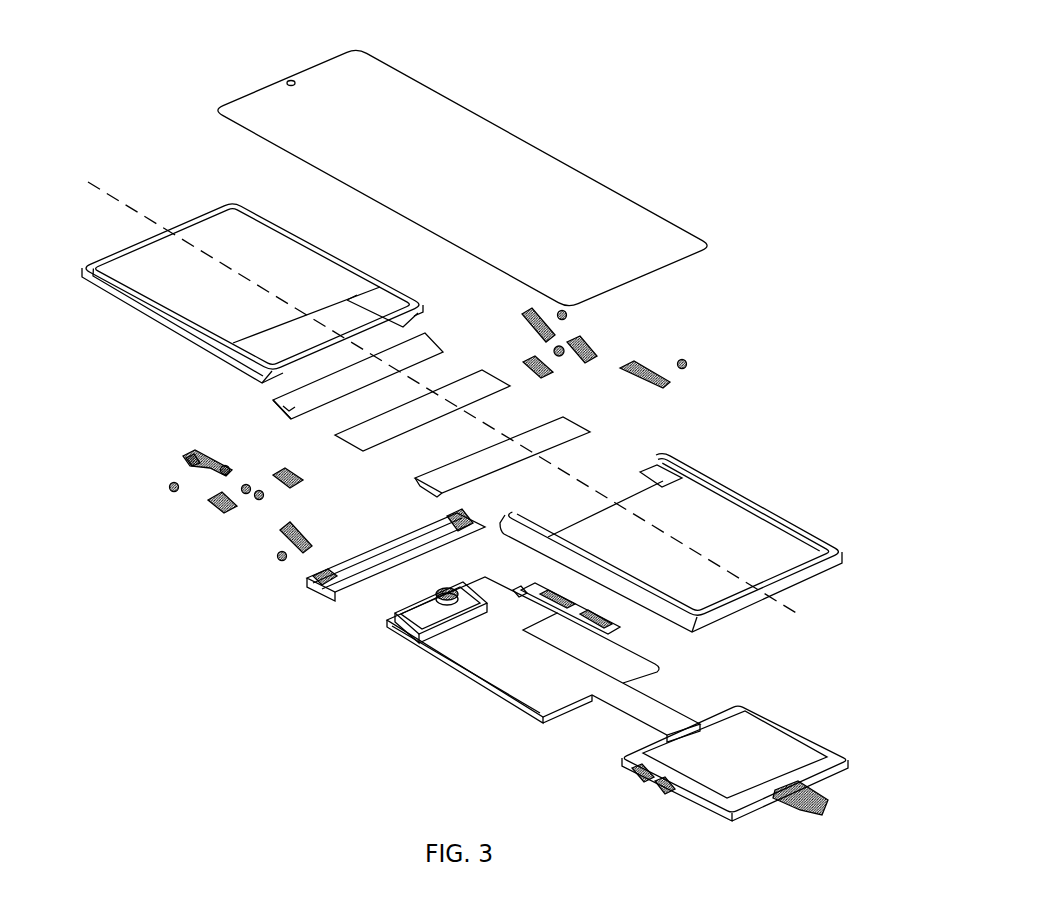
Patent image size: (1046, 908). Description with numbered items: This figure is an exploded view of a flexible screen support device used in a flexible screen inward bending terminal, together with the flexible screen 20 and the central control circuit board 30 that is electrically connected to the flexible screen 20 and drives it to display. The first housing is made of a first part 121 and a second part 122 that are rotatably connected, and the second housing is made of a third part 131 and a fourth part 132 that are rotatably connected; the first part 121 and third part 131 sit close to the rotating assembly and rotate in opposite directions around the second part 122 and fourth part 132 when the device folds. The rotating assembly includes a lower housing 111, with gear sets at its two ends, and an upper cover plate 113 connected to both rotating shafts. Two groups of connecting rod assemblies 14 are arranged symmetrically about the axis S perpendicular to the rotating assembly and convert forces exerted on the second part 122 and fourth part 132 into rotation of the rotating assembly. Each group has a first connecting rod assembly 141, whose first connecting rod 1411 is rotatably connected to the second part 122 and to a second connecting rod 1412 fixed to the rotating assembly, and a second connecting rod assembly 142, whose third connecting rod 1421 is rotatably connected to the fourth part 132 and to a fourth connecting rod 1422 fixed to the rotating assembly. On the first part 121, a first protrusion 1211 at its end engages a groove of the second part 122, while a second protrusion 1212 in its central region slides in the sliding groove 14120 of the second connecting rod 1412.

The central control circuit board 30 is at (260, 105).
The axis S is at (434, 384).
The second part 122 is at (142, 263).
The first part 121 is at (311, 398).
The first protrusion 1211 is at (273, 402).
The second protrusion 1212 is at (284, 410).
The upper cover plate 113 is at (377, 433).
The third part 131 is at (477, 460).
The fourth part 132 is at (843, 557).
The lower housing 111 is at (350, 568).
The flexible screen 20 is at (660, 663).
The connecting rod assemblies 14 is at (184, 511).
The first connecting rod assembly 141 is at (181, 463).
The second connecting rod assembly 142 is at (233, 568).
The first connecting rod 1411 is at (145, 502).
The second connecting rod 1412 is at (166, 441).
The sliding groove 14120 is at (190, 460).
The third connecting rod 1421 is at (277, 558).
The fourth connecting rod 1422 is at (283, 527).